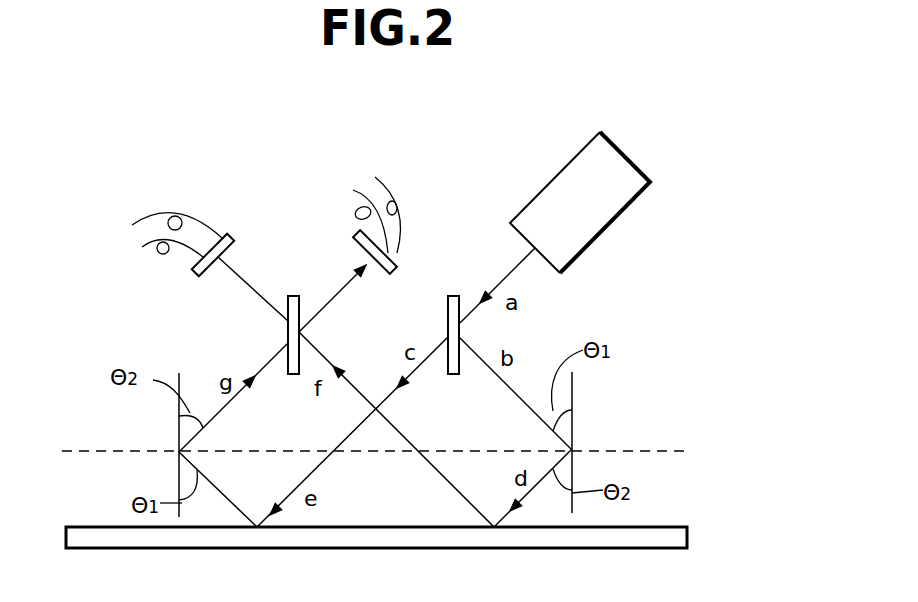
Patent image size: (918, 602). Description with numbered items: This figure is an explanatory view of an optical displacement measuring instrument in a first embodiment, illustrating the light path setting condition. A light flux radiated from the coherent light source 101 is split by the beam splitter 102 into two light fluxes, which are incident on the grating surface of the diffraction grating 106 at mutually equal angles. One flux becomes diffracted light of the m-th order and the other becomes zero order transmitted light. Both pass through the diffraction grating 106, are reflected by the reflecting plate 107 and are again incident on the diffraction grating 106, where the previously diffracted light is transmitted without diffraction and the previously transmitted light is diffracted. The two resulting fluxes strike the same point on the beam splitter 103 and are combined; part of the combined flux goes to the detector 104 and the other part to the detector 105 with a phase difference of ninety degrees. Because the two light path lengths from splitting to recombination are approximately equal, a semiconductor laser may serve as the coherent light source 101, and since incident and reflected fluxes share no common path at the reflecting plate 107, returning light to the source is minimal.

The coherent light source 101 is at (637, 203).
The beam splitter 102 is at (452, 295).
The beam splitter 103 is at (293, 295).
The detector 104 is at (195, 273).
The detector 105 is at (357, 236).
The diffraction grating 106 is at (685, 449).
The reflecting plate 107 is at (667, 527).